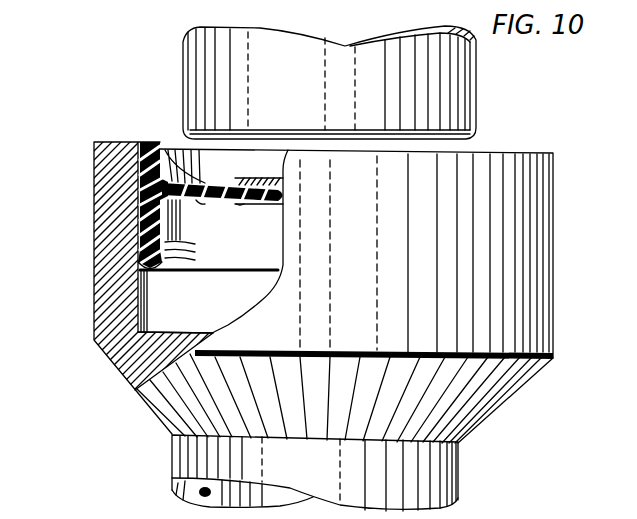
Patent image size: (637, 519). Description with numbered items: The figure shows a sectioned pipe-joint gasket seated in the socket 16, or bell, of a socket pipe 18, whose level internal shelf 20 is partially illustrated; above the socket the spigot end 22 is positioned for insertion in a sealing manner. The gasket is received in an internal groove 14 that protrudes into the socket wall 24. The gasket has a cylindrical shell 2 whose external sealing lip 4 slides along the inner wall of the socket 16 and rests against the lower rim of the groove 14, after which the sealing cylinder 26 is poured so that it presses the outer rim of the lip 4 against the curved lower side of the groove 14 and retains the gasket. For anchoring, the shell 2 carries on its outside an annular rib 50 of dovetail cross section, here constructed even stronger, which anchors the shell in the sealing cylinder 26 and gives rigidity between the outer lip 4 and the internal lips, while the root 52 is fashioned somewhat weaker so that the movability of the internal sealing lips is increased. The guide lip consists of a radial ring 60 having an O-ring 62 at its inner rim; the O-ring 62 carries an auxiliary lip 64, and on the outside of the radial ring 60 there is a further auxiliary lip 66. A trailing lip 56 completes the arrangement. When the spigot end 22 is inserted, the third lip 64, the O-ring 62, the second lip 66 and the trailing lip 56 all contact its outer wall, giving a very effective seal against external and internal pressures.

The cylindrical shell 2 is at (209, 252).
The external sealing lip 4 is at (150, 270).
The internal groove 14 is at (140, 258).
The socket 16 is at (95, 180).
The socket pipe 18 is at (180, 449).
The internal shelf 20 is at (212, 333).
The spigot end 22 is at (185, 68).
The socket wall 24 is at (148, 316).
The sealing cylinder 26 is at (158, 146).
The annular rib 50 is at (141, 194).
The root 52 is at (182, 219).
The trailing lip 56 is at (189, 165).
The radial ring 60 is at (200, 197).
The O-ring 62 is at (240, 204).
The auxiliary lip 64 is at (284, 186).
The auxiliary lip 66 is at (210, 184).